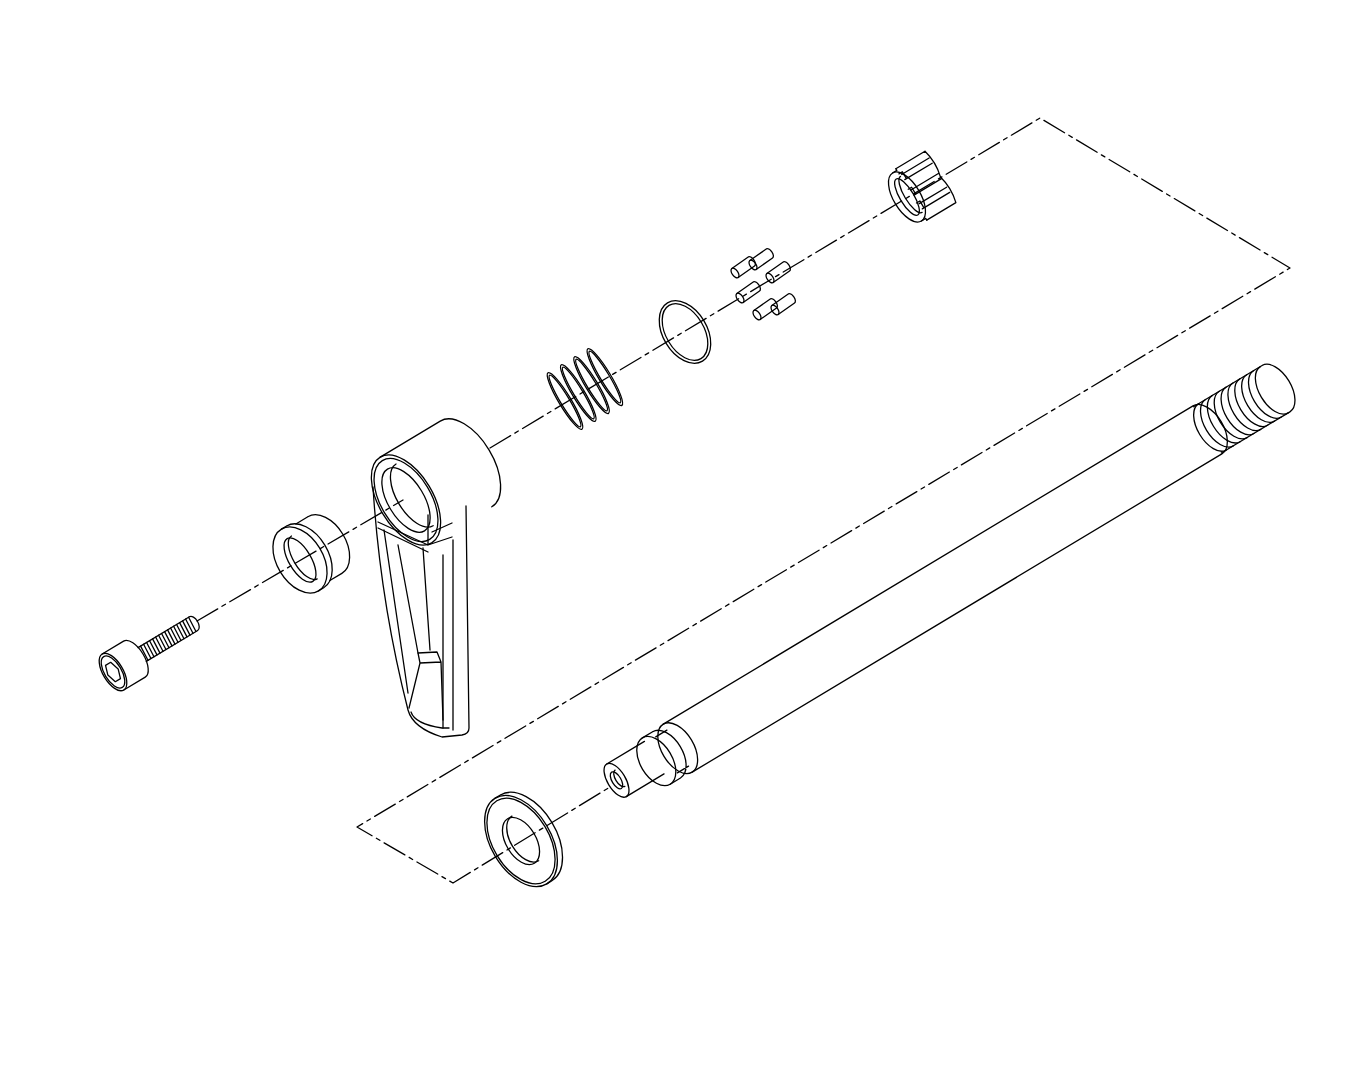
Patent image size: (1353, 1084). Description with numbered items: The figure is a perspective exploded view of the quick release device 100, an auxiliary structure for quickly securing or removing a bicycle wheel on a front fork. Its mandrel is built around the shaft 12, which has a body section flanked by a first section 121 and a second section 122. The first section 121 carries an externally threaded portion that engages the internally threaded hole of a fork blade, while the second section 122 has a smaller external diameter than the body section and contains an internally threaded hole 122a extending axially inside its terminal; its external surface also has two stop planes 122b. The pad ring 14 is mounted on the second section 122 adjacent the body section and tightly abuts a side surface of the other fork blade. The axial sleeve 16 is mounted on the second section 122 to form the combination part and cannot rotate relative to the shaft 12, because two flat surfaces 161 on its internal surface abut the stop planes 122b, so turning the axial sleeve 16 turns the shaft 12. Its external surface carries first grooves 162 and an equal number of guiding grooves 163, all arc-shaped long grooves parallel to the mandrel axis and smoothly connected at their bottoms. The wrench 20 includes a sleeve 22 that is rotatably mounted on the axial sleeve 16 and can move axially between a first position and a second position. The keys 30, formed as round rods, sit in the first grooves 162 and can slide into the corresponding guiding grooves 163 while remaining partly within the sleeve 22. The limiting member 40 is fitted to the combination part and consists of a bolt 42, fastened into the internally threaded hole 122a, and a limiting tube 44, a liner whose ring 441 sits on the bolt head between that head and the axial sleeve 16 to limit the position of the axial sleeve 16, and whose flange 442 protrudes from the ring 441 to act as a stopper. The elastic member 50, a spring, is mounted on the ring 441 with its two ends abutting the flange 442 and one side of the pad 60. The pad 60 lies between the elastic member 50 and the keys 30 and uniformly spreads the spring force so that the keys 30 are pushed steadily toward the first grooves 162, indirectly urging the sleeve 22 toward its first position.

The quick release device 100 is at (195, 222).
The shaft 12 is at (1025, 547).
The first section 121 is at (1272, 428).
The second section 122 is at (638, 780).
The internally threaded hole 122a is at (616, 787).
The stop planes 122b is at (660, 745).
The pad ring 14 is at (495, 817).
The axial sleeve 16 is at (892, 197).
The flat surfaces 161 is at (889, 199).
The first grooves 162 is at (457, 573).
The guiding grooves 163 is at (940, 215).
The wrench 20 is at (610, 467).
The sleeve 22 is at (488, 488).
The keys 30 is at (744, 262).
The limiting member 40 is at (303, 340).
The bolt 42 is at (162, 630).
The limiting tube 44 is at (347, 382).
The ring 441 is at (320, 520).
The flange 442 is at (273, 545).
The elastic member 50 is at (563, 363).
The pad 60 is at (667, 303).